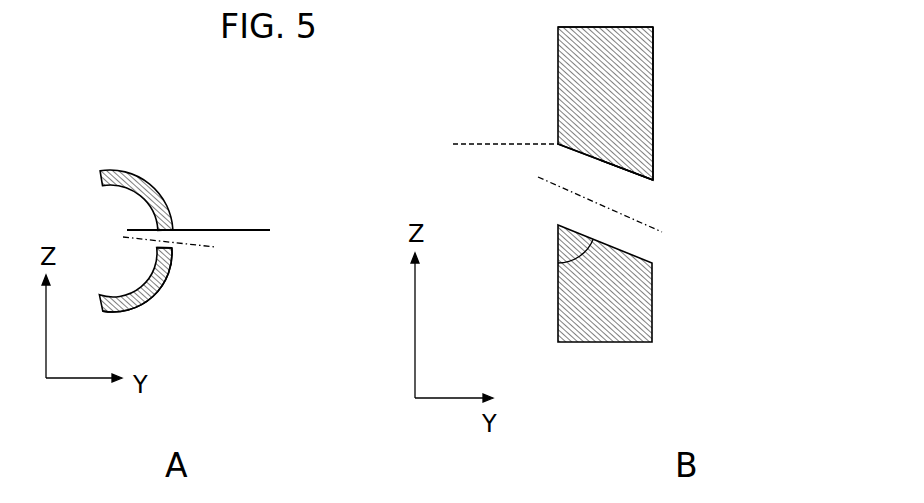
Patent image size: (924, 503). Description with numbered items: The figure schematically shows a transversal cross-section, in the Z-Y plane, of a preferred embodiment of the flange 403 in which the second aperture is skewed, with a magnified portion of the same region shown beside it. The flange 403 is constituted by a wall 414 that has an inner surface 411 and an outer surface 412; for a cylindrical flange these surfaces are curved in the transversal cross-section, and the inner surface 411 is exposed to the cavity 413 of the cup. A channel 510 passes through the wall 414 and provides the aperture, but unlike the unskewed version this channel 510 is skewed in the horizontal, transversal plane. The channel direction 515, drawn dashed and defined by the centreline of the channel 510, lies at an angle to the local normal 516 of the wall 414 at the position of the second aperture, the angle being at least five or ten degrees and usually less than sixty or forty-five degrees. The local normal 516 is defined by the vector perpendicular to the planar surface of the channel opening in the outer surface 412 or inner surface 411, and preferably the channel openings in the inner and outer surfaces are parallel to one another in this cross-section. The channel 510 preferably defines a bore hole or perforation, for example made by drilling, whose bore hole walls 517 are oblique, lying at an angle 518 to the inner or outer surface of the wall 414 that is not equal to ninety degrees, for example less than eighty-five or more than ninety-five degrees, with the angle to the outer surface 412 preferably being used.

In FIG. 5B, the flange 403 is at (653, 77).
In FIG. 5A, the inner surface 411 is at (148, 272).
In FIG. 5B, the inner surface 411 is at (558, 72).
In FIG. 5A, the outer surface 412 is at (170, 273).
In FIG. 5B, the outer surface 412 is at (653, 43).
In FIG. 5A, the cavity 413 is at (115, 225).
In FIG. 5A, the wall 414 is at (127, 183).
In FIG. 5B, the wall 414 is at (640, 125).
In FIG. 5A, the channel 510 is at (175, 250).
In FIG. 5B, the channel 510 is at (628, 192).
In FIG. 5A, the channel direction 515 is at (200, 248).
In FIG. 5B, the channel direction 515 is at (623, 214).
In FIG. 5A, the local normal 516 is at (238, 230).
In FIG. 5B, the local normal 516 is at (500, 129).
In FIG. 5B, the bore hole walls 517 is at (645, 260).
In FIG. 5B, the angle 518 is at (558, 248).